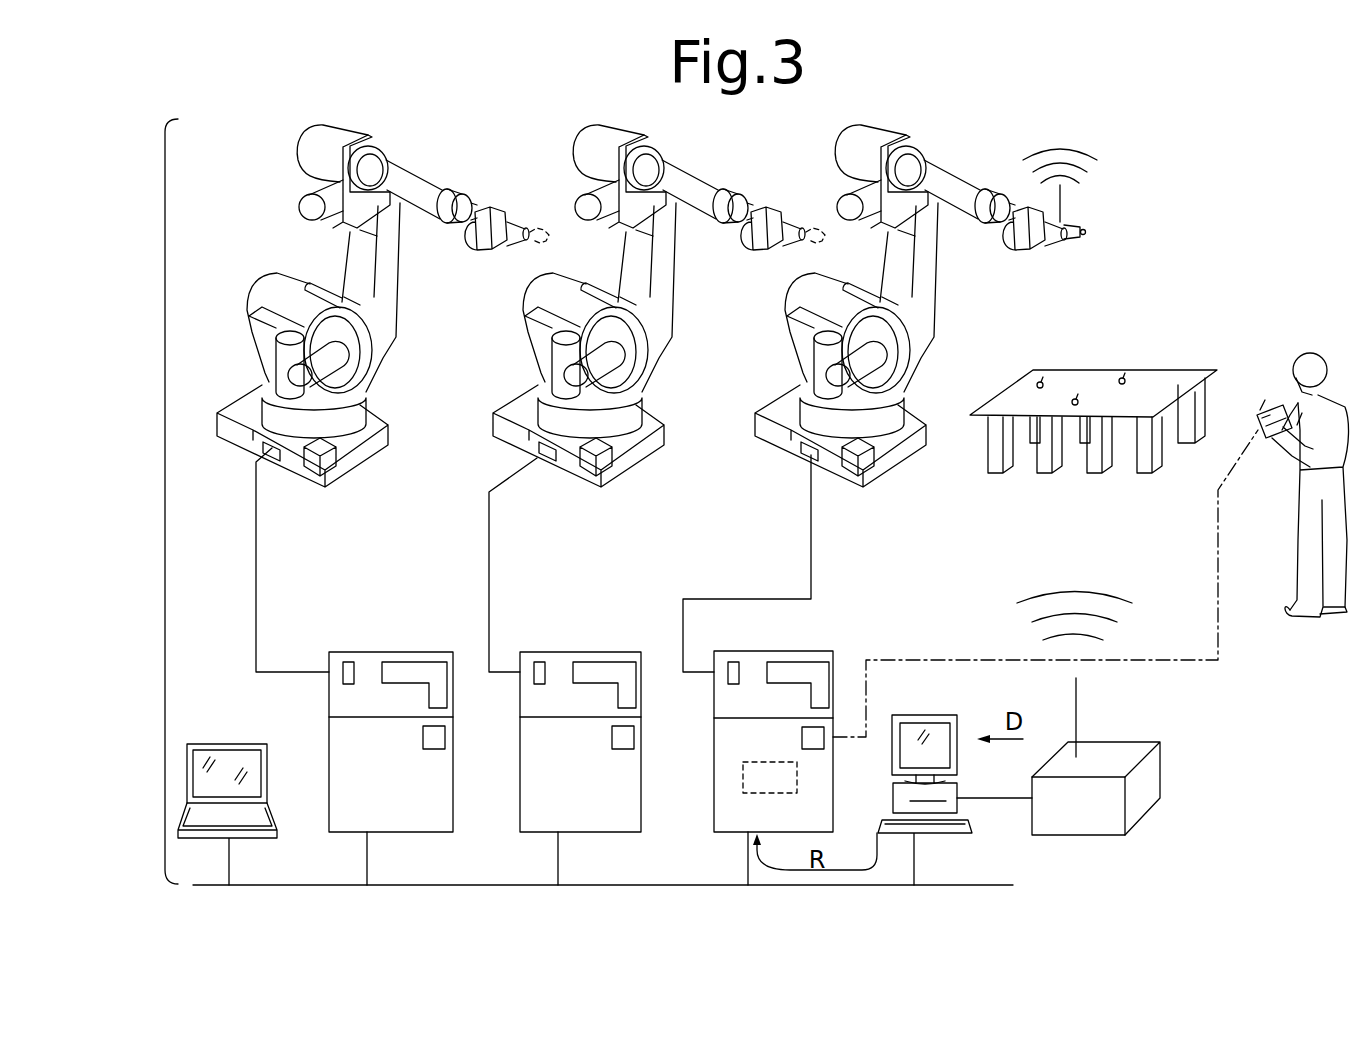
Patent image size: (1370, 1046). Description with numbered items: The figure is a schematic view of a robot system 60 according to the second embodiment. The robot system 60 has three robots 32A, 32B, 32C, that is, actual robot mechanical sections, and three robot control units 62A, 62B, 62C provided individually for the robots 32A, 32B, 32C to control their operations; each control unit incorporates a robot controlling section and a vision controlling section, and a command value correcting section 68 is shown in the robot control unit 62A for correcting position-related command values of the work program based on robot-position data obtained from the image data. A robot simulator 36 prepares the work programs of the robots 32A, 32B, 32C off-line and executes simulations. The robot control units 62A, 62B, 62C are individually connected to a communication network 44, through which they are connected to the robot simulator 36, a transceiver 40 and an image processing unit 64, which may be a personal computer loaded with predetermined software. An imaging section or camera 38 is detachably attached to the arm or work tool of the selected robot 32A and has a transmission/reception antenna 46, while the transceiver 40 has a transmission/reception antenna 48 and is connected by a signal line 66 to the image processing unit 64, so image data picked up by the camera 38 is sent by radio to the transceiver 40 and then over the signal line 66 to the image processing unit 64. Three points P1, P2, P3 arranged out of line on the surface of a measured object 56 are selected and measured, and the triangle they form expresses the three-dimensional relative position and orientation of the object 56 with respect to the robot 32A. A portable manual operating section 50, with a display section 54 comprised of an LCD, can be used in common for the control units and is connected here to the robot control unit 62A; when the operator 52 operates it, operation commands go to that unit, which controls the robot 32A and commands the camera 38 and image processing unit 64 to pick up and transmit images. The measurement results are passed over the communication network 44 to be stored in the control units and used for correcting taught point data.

The robot 32A is at (815, 136).
The robot 32B is at (552, 134).
The robot 32C is at (280, 134).
The robot simulator 36 is at (231, 738).
The imaging section (camera) 38 is at (539, 226).
The transceiver 40 is at (1178, 786).
The communication network 44 is at (607, 884).
The transmission/reception antenna 46 is at (1045, 193).
The transmission/reception antenna 48 is at (1078, 708).
The manual operating section 50 is at (1283, 392).
The operator 52 is at (1280, 632).
The display section 54 is at (1262, 402).
The measured object 56 is at (1199, 360).
The robot system 60 is at (163, 498).
The robot control unit 62A is at (710, 810).
The robot control unit 62B is at (517, 810).
The robot control unit 62C is at (326, 810).
The image processing unit 64 is at (968, 808).
The signal line 66 is at (988, 798).
The command value correcting section 68 is at (742, 766).
The point P1 is at (1128, 374).
The point P2 is at (1079, 396).
The point P3 is at (1043, 378).